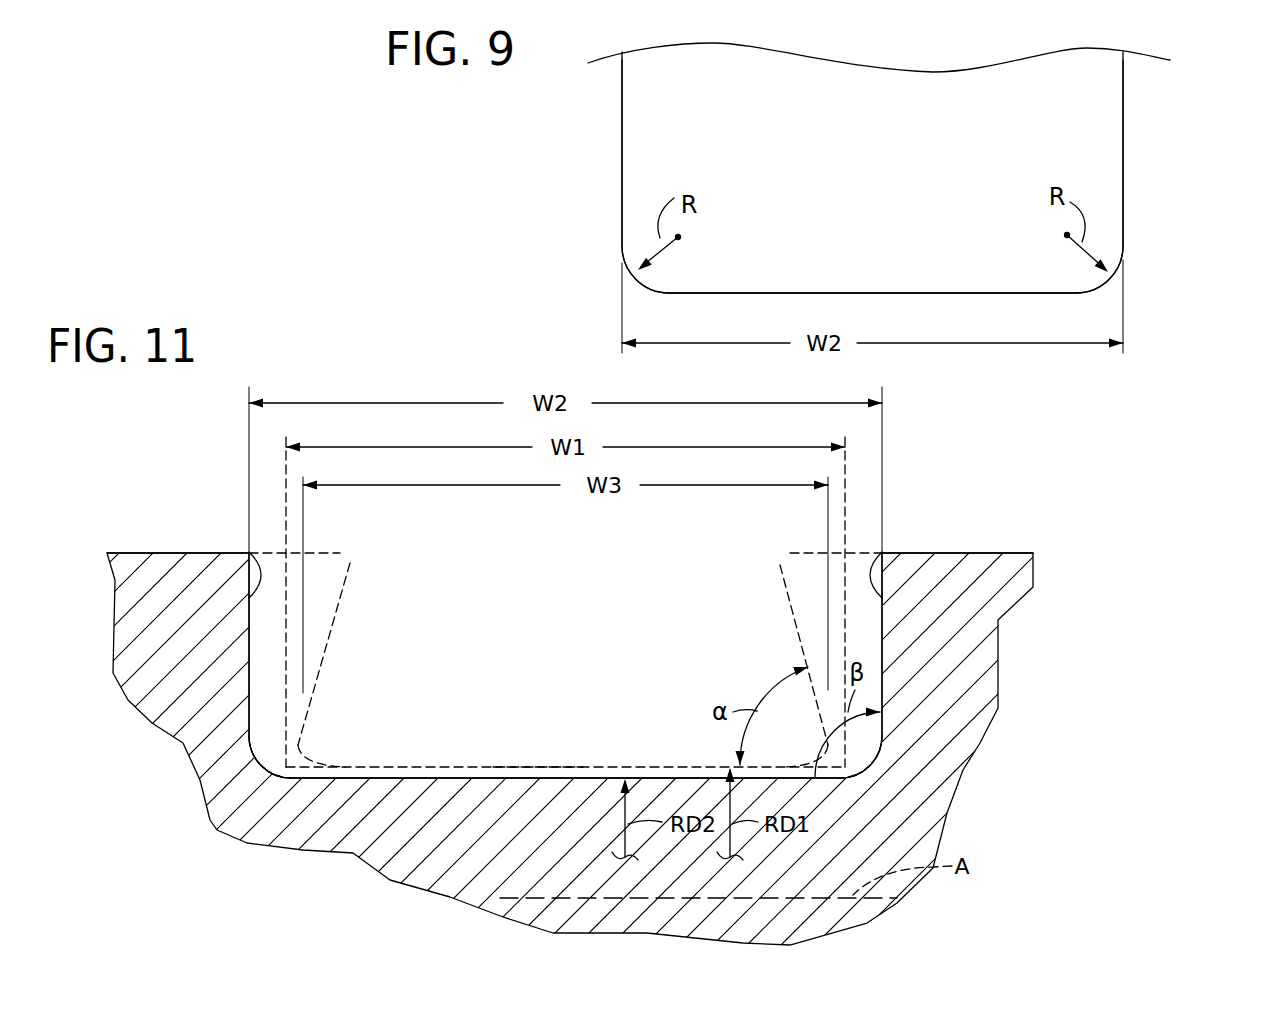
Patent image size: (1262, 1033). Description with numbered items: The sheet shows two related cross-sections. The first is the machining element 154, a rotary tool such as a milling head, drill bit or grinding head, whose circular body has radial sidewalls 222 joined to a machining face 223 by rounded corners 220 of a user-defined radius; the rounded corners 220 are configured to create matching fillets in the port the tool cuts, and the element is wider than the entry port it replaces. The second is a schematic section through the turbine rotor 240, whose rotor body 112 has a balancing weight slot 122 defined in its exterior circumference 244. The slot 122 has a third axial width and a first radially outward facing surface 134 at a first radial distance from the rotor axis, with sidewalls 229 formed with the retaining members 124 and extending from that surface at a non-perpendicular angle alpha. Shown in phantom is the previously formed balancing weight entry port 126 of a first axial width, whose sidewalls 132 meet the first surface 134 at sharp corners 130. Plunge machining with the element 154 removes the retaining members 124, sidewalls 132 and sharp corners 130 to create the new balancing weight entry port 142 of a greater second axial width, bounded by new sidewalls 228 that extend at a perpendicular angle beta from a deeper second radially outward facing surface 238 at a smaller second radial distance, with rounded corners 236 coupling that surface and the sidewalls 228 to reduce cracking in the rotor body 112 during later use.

In FIG. 9, the machining element 154 is at (890, 183).
In FIG. 9, the radial sidewalls 222 is at (622, 132).
In FIG. 9, the rounded corners 220 is at (633, 272).
In FIG. 9, the machining face 223 is at (853, 293).
In FIG. 11, the rotor body 112 is at (933, 650).
In FIG. 11, the balancing weight slot 122 is at (546, 626).
In FIG. 11, the retaining members 124 is at (320, 568).
In FIG. 11, the previously formed balancing weight entry port 126 is at (288, 620).
In FIG. 11, the sharp corners 130 is at (302, 752).
In FIG. 11, the sidewalls 132 is at (297, 588).
In FIG. 11, the first radially outward facing surface 134 is at (583, 767).
In FIG. 11, the balancing weight entry port 142 is at (870, 649).
In FIG. 11, the sidewalls 228 is at (249, 554).
In FIG. 11, the sidewalls 229 is at (322, 656).
In FIG. 11, the rounded corners 236 is at (265, 758).
In FIG. 11, the second radially outward facing surface 238 is at (493, 770).
In FIG. 11, the turbine rotor 240 is at (984, 548).
In FIG. 11, the exterior circumference 244 is at (135, 551).